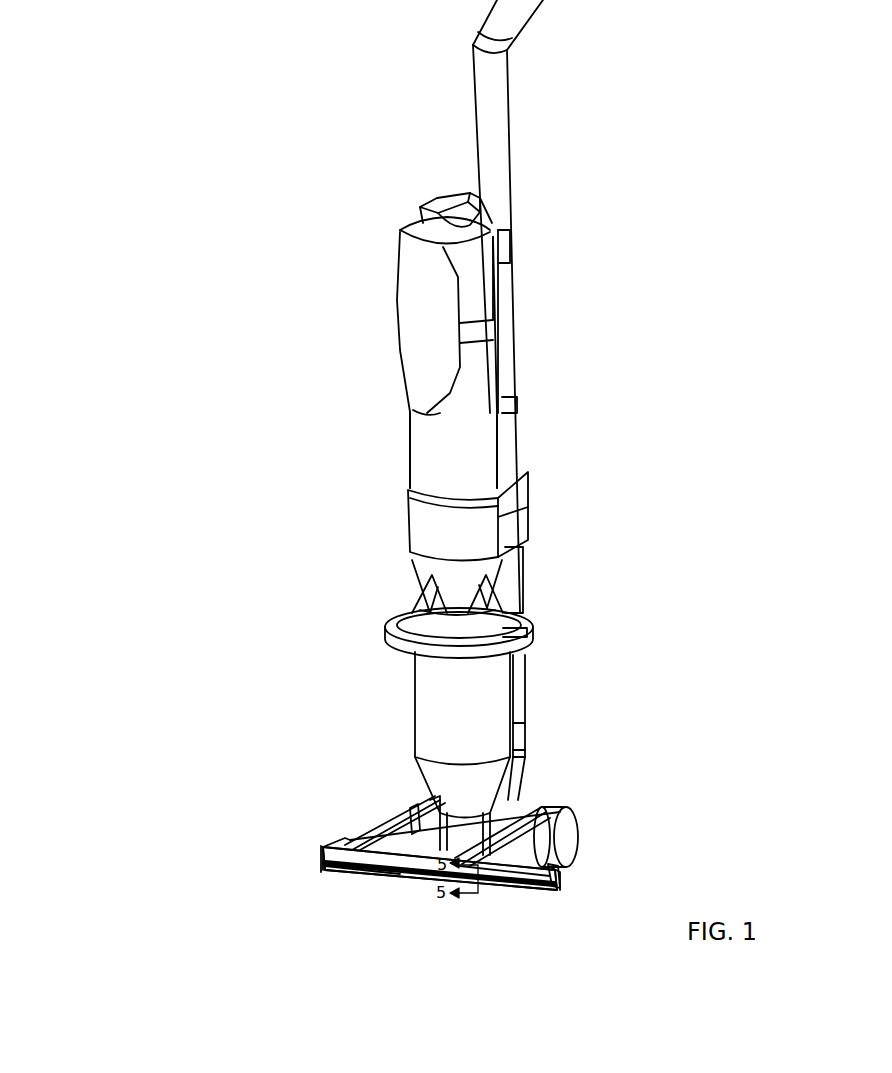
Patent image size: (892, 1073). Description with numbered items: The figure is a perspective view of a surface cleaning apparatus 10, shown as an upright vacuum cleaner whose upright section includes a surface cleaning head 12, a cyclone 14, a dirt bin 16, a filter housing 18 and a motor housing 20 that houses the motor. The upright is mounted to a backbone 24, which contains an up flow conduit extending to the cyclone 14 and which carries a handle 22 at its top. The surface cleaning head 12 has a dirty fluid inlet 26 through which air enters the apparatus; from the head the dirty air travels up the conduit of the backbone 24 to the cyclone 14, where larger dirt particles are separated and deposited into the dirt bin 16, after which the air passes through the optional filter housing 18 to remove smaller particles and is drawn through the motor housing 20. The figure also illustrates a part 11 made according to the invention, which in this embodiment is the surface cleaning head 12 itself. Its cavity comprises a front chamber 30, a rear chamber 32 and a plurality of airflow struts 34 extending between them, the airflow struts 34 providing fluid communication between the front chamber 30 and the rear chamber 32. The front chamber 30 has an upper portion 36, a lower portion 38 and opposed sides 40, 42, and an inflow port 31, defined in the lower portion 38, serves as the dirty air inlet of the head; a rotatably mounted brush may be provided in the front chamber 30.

The surface cleaning apparatus 10 is at (158, 198).
The part 11 is at (249, 793).
The surface cleaning head 12 is at (586, 874).
The cyclone 14 is at (433, 573).
The dirt bin 16 is at (433, 688).
The filter housing 18 is at (433, 450).
The motor housing 20 is at (472, 298).
The handle 22 is at (524, 2).
The backbone 24 is at (517, 690).
The dirty fluid inlet 26 is at (423, 882).
The inflow port 31 is at (440, 868).
The front chamber 30 is at (497, 870).
The rear chamber 32 is at (550, 807).
The airflow struts 34 is at (413, 813).
The upper portion 36 is at (323, 858).
The lower portion 38 is at (325, 869).
The side 40 is at (555, 870).
The side 42 is at (330, 842).